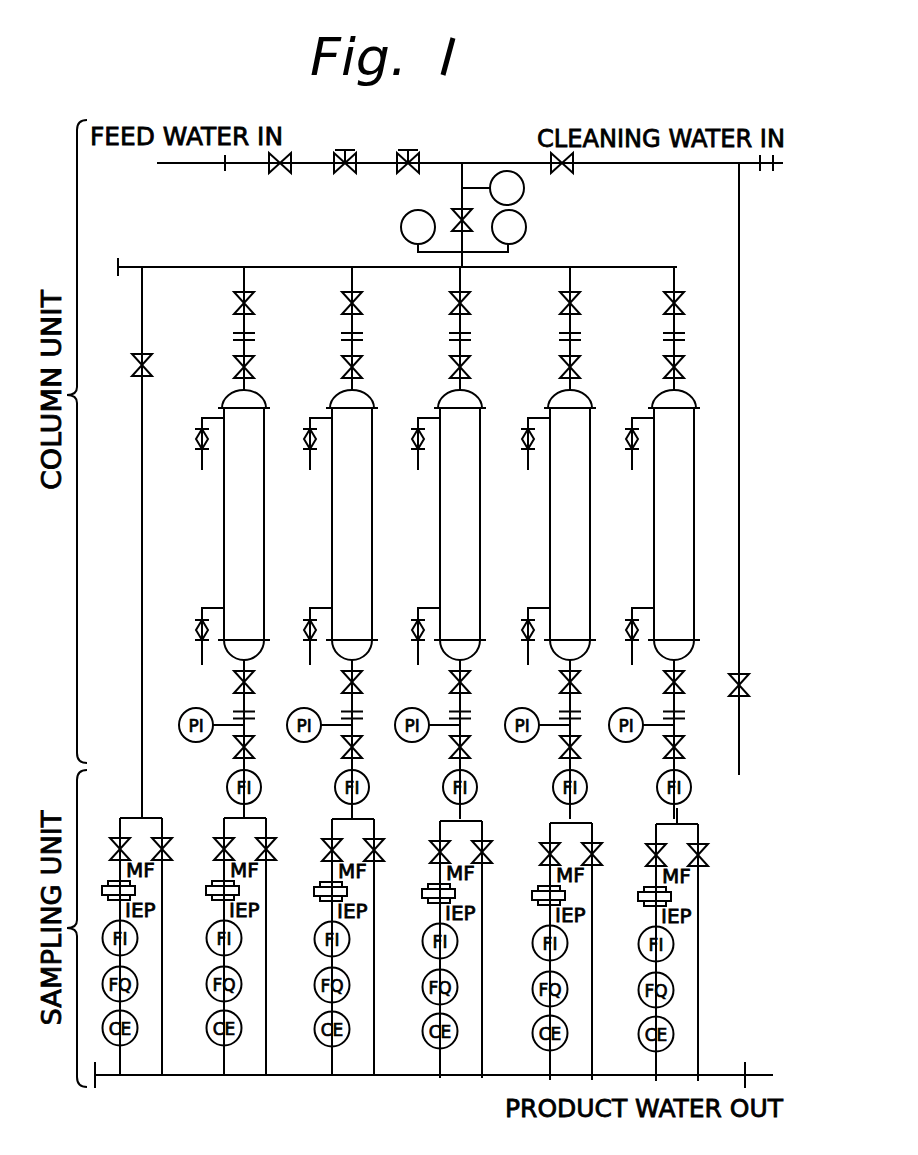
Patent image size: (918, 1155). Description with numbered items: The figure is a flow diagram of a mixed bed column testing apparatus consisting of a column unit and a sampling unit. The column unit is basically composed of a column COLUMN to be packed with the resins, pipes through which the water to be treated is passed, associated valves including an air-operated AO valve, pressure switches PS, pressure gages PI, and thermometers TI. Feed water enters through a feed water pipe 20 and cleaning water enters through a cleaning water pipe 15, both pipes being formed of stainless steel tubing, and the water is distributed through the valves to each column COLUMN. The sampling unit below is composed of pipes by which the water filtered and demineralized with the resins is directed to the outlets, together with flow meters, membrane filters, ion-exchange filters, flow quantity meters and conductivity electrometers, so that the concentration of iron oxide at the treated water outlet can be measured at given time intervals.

The air-operated valve AO is at (340, 150).
The cleaning water pipe (15A SUS304TP) 15 is at (590, 166).
The feed water header pipe (20A SUS304TP) 20 is at (152, 267).
The pressure switch PS is at (493, 188).
The pressure gage PI is at (418, 227).
The thermometer TI is at (509, 227).
The column COLUMN is at (482, 568).